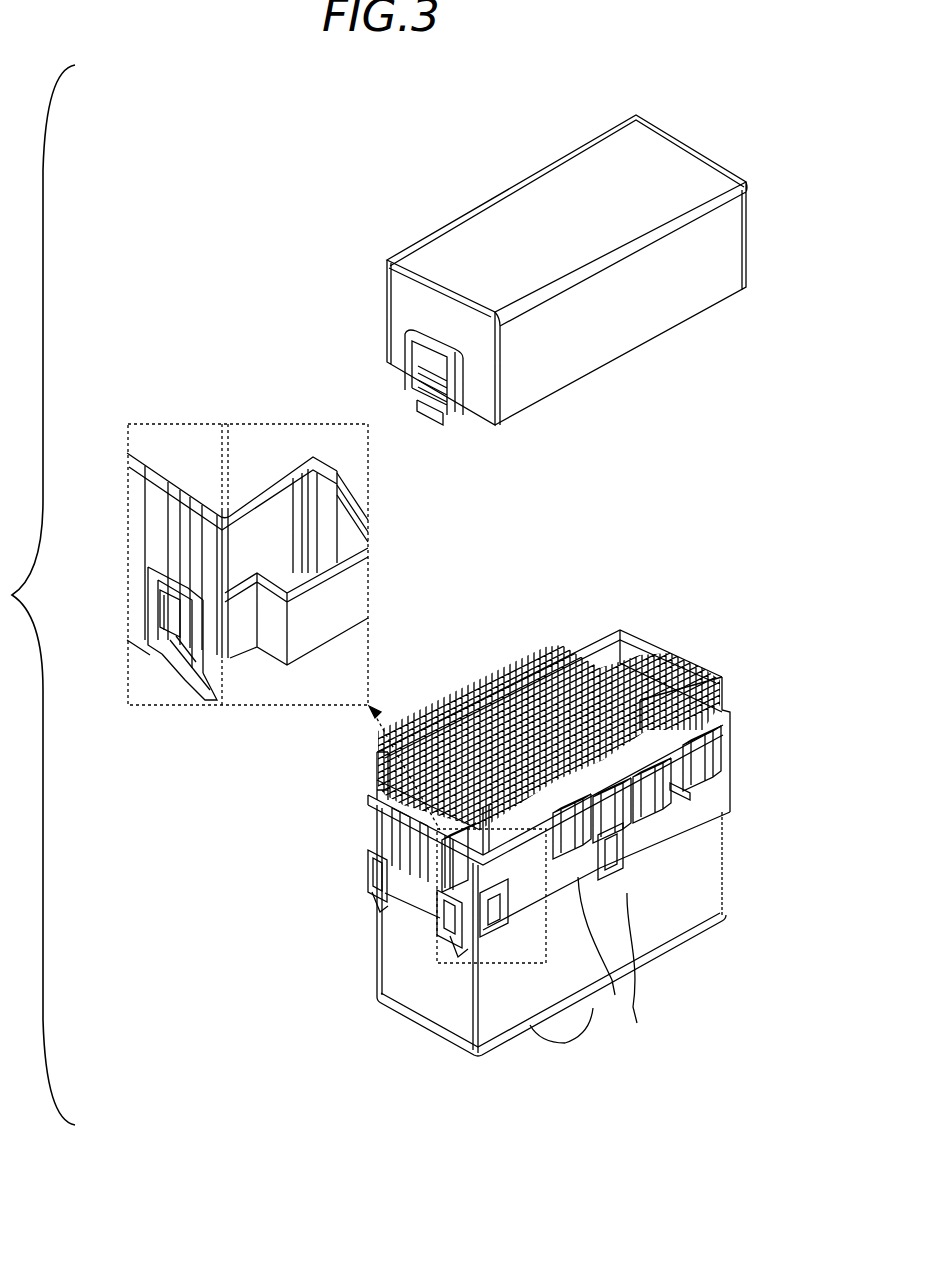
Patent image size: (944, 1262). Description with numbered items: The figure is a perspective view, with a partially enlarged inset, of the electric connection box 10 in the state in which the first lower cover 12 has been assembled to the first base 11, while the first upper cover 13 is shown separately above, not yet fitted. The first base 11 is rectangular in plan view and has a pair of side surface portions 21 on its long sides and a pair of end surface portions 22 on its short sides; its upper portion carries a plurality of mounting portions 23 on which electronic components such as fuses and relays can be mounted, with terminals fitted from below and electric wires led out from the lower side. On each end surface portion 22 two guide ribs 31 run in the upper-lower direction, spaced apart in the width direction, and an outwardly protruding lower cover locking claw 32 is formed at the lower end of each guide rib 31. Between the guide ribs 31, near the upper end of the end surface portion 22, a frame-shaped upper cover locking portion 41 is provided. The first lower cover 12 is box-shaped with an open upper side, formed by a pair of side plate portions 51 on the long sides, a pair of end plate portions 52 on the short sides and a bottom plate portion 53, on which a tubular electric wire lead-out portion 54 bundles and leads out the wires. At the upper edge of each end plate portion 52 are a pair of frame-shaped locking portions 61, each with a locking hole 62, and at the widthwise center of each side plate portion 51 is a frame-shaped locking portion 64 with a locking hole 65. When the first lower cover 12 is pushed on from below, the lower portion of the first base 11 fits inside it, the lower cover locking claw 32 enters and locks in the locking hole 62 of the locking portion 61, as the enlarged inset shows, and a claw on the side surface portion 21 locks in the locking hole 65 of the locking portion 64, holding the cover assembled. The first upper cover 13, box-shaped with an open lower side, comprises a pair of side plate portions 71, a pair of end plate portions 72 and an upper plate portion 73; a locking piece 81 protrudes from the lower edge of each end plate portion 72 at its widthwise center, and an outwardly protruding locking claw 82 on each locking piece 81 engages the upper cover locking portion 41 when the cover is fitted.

The electric connection box 10 is at (318, 348).
The first base 11 is at (643, 634).
The first lower cover 12 is at (374, 963).
The first upper cover 13 is at (428, 226).
The side surface portion 21 is at (507, 688).
The end surface portion 22 is at (650, 655).
The mounting portion 23 is at (572, 682).
The guide rib 31 is at (175, 548).
The lower cover locking claw 32 is at (167, 603).
The upper cover locking portion 41 is at (395, 880).
The side plate portion 51 is at (660, 922).
The end plate portion 52 is at (420, 992).
The bottom plate portion 53 is at (490, 1050).
The electric wire lead-out portion 54 is at (580, 1028).
The locking portion 61 is at (140, 577).
The locking hole 62 is at (173, 627).
The locking portion 64 is at (596, 878).
The locking hole 65 is at (612, 865).
The side plate portion 71 is at (648, 322).
The end plate portion 72 is at (402, 300).
The upper plate portion 73 is at (522, 206).
The locking piece 81 is at (452, 414).
The locking claw 82 is at (428, 410).